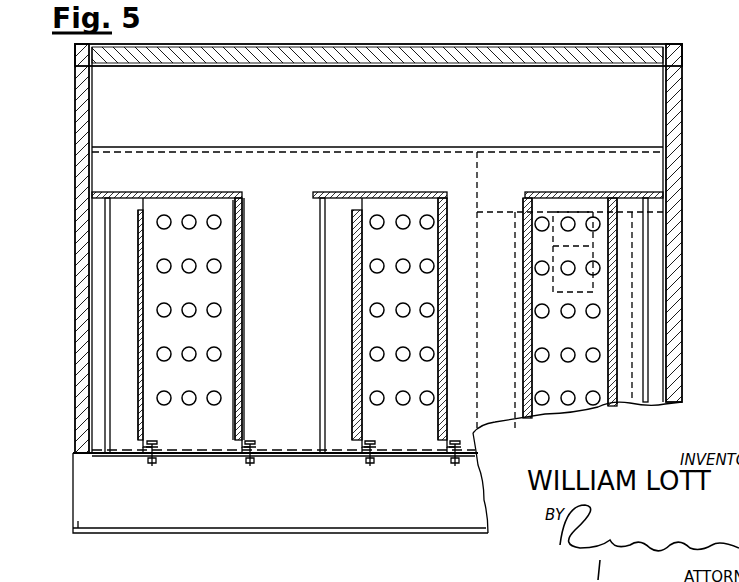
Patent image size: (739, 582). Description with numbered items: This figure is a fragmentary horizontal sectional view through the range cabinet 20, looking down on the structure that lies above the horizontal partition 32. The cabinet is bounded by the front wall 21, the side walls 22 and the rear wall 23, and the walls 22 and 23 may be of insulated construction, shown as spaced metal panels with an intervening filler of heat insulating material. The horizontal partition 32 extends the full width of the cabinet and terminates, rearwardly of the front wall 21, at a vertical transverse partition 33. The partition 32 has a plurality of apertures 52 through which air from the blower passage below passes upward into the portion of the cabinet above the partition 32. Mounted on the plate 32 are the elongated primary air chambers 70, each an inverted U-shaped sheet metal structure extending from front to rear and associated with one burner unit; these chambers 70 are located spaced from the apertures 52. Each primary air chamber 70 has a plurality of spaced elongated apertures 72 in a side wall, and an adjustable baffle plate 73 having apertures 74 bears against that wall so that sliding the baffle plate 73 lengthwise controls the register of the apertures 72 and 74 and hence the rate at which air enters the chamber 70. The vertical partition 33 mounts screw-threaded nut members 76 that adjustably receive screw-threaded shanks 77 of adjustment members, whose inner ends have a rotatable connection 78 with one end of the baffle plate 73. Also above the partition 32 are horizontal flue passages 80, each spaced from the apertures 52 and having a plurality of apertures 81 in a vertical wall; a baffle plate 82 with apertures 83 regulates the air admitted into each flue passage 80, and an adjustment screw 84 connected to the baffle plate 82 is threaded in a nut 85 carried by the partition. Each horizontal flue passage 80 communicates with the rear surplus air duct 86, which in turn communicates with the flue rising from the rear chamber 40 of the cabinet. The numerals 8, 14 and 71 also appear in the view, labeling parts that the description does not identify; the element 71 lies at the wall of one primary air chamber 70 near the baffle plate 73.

The duct 8 is at (579, 7).
The air inlet duct 14 is at (303, 7).
The range cabinet 20 is at (699, 239).
The front wall 21 is at (207, 534).
The side walls 22 is at (80, 205).
The rear wall 23 is at (505, 40).
The horizontal partition 32 is at (207, 445).
The vertical transverse partition 33 is at (284, 455).
The chamber 40 is at (532, 129).
The apertures 52 is at (212, 406).
The primary air chambers 70 is at (120, 212).
The side plate 71 is at (322, 224).
The elongated apertures 72 is at (352, 260).
The adjustable baffle plate 73 is at (363, 212).
The apertures 74 is at (360, 326).
The screw-threaded nut members 76 is at (372, 460).
The screw-threaded shanks 77 is at (368, 462).
The rotatable connection 78 is at (402, 457).
The horizontal flue passages 80 is at (292, 354).
The apertures 81 is at (236, 252).
The baffle plate 82 is at (244, 367).
The apertures 83 is at (244, 411).
The adjustment screw 84 is at (250, 465).
The nut 85 is at (258, 448).
The rear surplus air duct 86 is at (327, 186).